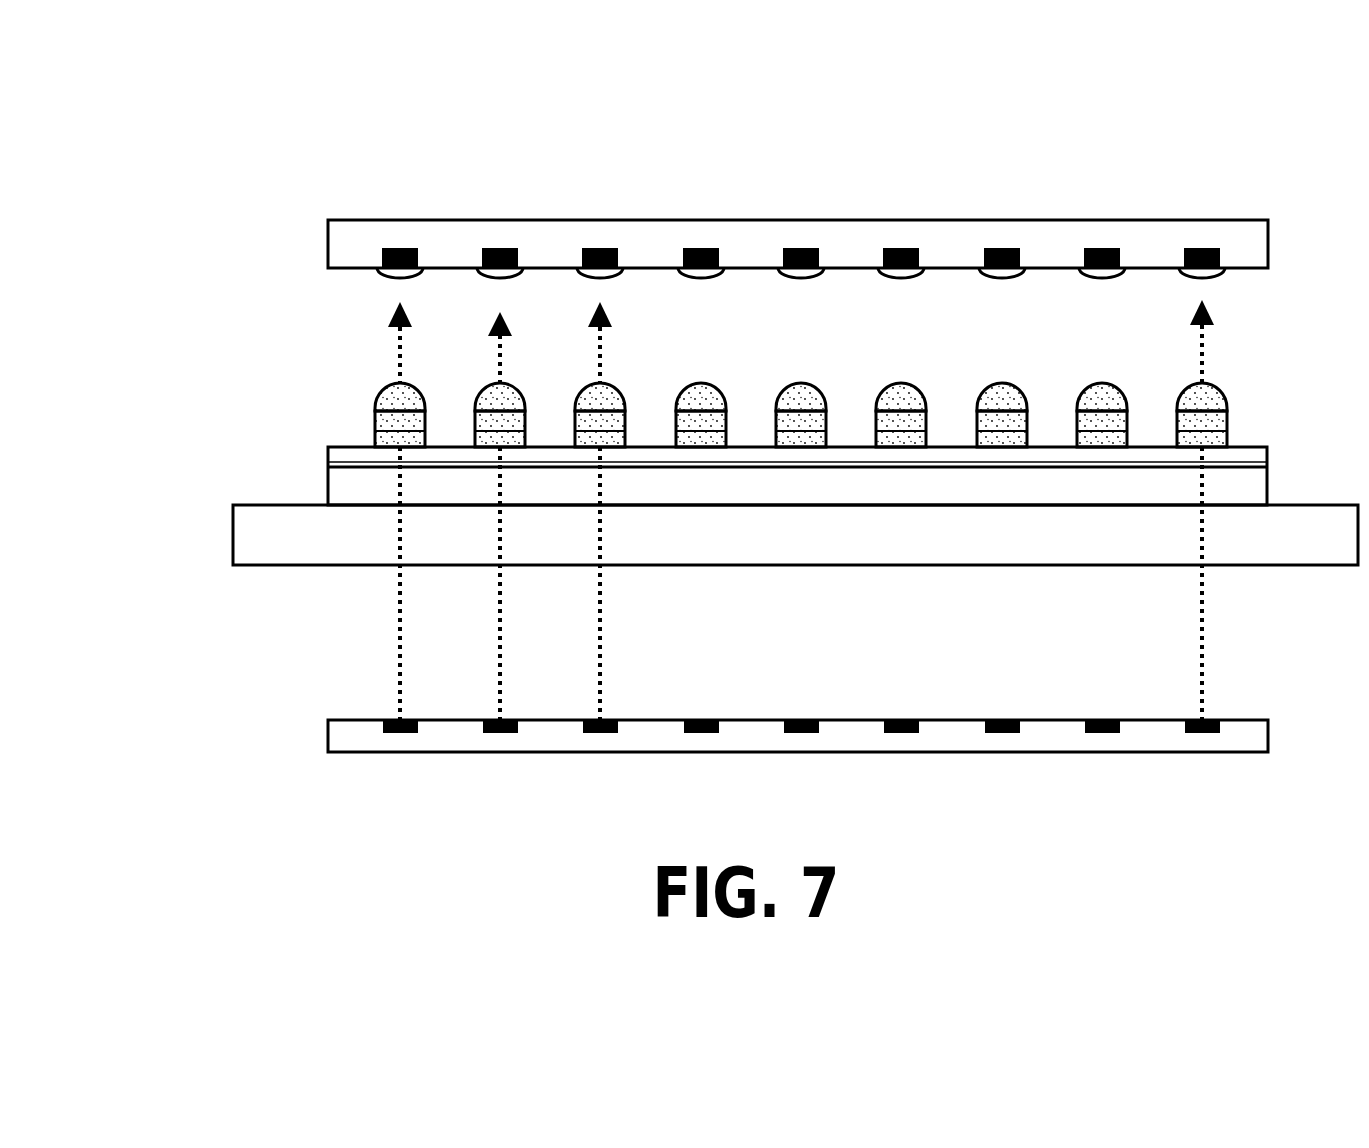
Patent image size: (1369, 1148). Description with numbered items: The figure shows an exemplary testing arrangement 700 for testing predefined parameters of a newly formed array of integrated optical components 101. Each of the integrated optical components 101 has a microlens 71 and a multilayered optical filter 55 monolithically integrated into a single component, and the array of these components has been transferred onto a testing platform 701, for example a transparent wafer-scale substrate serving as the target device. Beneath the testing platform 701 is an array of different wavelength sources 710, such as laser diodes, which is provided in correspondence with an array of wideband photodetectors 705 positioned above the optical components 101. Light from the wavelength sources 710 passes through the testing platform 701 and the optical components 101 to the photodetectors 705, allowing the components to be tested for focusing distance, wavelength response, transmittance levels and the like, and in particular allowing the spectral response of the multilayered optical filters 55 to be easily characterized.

The testing arrangement 700 is at (719, 126).
The wideband photodetectors 705 is at (348, 245).
The testing platform 701 is at (350, 456).
The wavelength sources 710 is at (350, 730).
The integrated optical components 101 is at (625, 372).
The microlenses 71 is at (383, 385).
The optical filters 55 is at (378, 430).